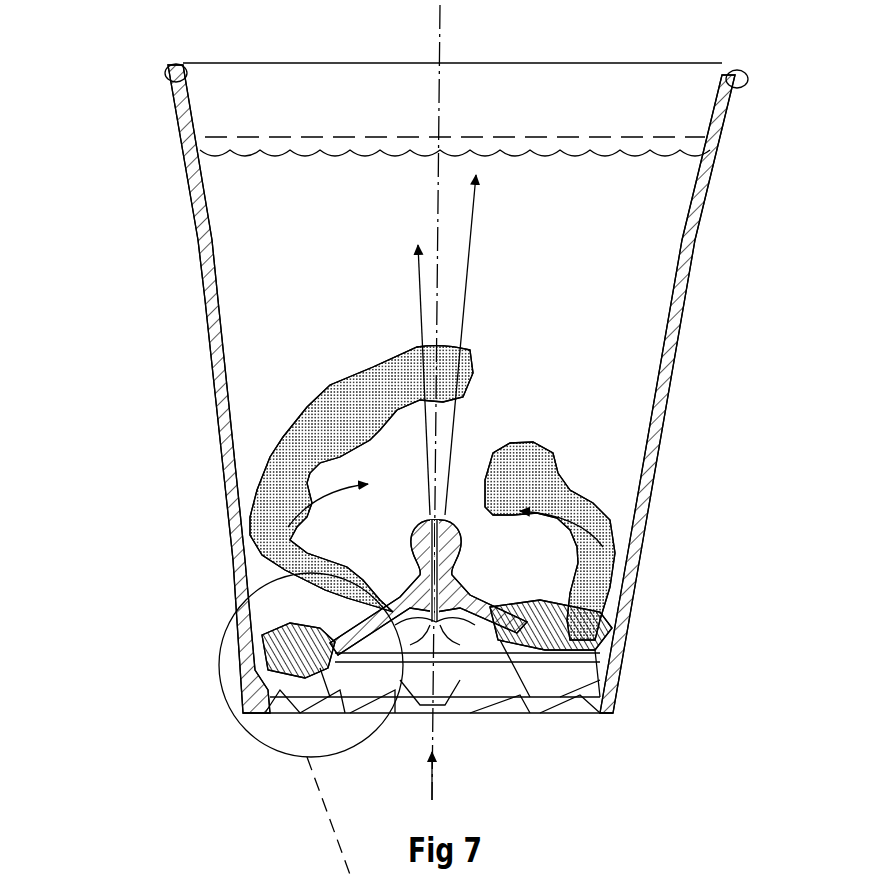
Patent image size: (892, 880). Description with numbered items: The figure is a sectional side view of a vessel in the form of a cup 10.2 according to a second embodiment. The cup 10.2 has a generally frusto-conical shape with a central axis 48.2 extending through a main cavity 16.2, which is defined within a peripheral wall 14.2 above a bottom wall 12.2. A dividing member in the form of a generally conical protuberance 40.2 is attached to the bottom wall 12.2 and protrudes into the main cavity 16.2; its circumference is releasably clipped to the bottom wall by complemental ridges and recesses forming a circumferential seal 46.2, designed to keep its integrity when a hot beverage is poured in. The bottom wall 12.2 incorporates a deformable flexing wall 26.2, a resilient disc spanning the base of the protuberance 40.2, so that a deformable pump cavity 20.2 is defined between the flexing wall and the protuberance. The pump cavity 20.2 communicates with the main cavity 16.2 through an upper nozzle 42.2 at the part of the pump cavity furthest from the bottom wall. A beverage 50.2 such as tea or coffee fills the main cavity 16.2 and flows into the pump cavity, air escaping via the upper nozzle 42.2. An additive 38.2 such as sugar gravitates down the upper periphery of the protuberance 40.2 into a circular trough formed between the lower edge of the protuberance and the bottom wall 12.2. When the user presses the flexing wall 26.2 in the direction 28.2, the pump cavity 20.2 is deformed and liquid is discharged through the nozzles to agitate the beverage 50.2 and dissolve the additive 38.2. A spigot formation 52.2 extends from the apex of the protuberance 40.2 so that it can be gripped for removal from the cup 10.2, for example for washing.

The cup 10.2 is at (133, 180).
The bottom wall 12.2 is at (543, 717).
The peripheral wall 14.2 is at (207, 302).
The main cavity 16.2 is at (569, 300).
The pump cavity 20.2 is at (410, 705).
The flexing wall 26.2 is at (448, 715).
The direction 28.2 is at (432, 782).
The additive 38.2 is at (610, 625).
The protuberance 40.2 is at (478, 627).
The upper nozzle 42.2 is at (447, 510).
The circumferential seal 46.2 is at (612, 657).
The central axis 48.2 is at (440, 59).
The beverage 50.2 is at (668, 195).
The spigot formation 52.2 is at (458, 543).